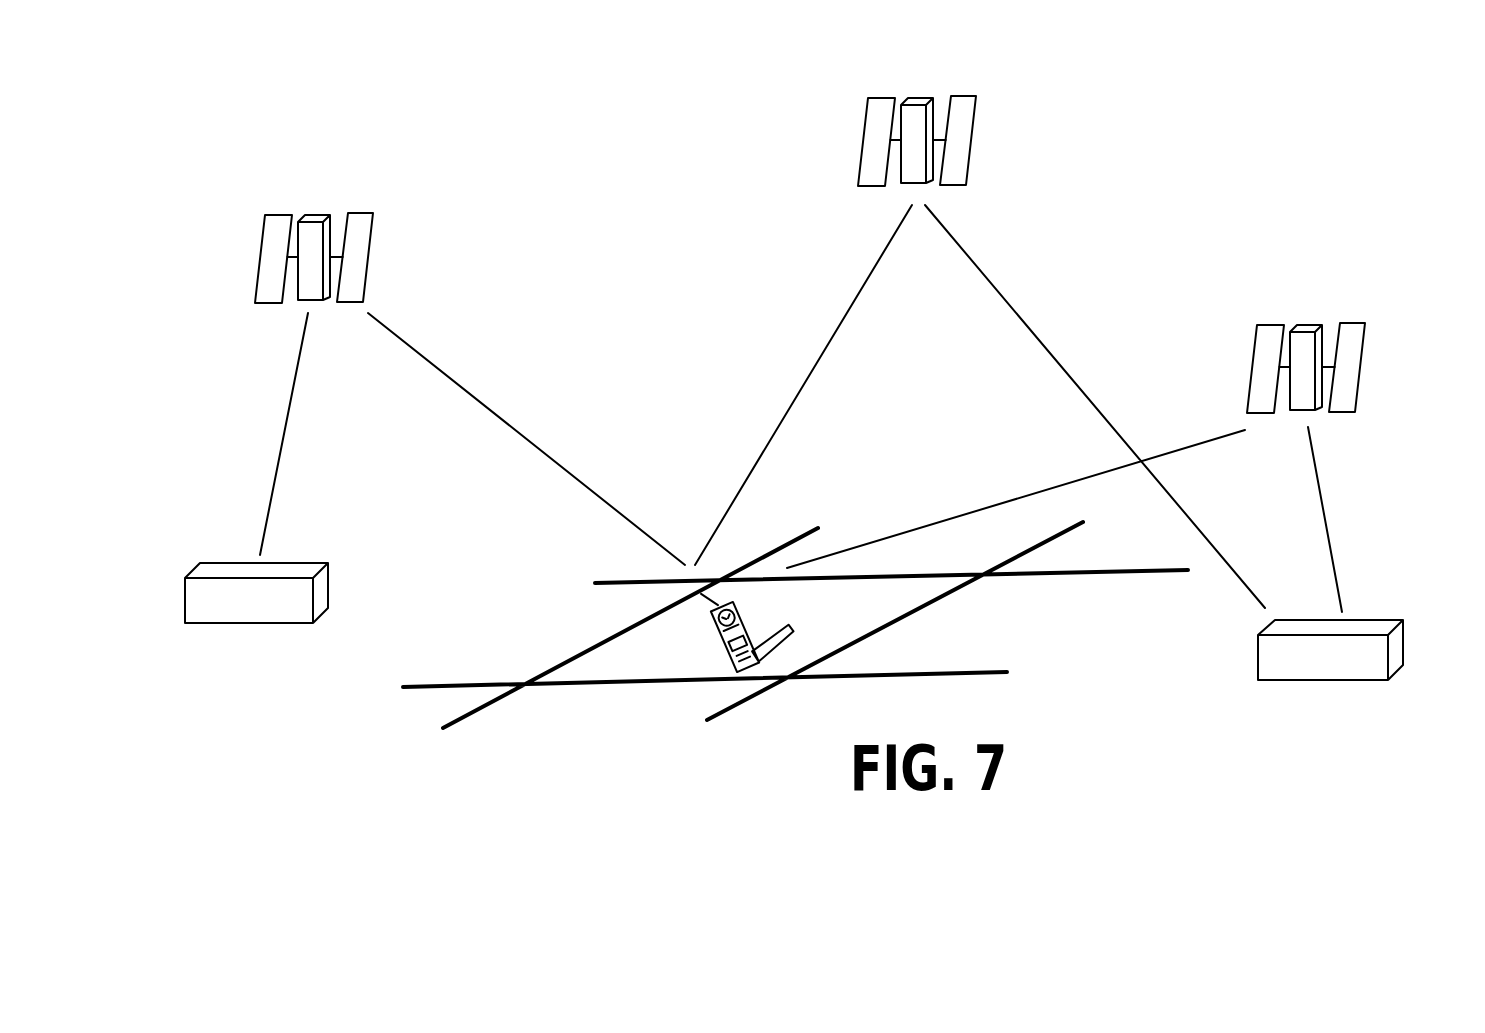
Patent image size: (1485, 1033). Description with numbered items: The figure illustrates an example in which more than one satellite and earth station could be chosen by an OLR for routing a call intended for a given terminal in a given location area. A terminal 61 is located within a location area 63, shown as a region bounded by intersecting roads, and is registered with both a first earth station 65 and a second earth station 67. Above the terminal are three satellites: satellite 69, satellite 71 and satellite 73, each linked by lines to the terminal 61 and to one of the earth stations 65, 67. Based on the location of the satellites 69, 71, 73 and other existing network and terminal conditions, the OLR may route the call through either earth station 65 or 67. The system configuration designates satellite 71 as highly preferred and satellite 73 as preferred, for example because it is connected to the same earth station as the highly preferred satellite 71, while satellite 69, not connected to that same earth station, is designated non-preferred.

The terminal 61 is at (750, 613).
The location area 63 is at (658, 647).
The earth station 65 is at (248, 623).
The earth station 67 is at (1405, 645).
The satellite 69 is at (367, 283).
The satellite 71 is at (973, 160).
The satellite 73 is at (1360, 390).